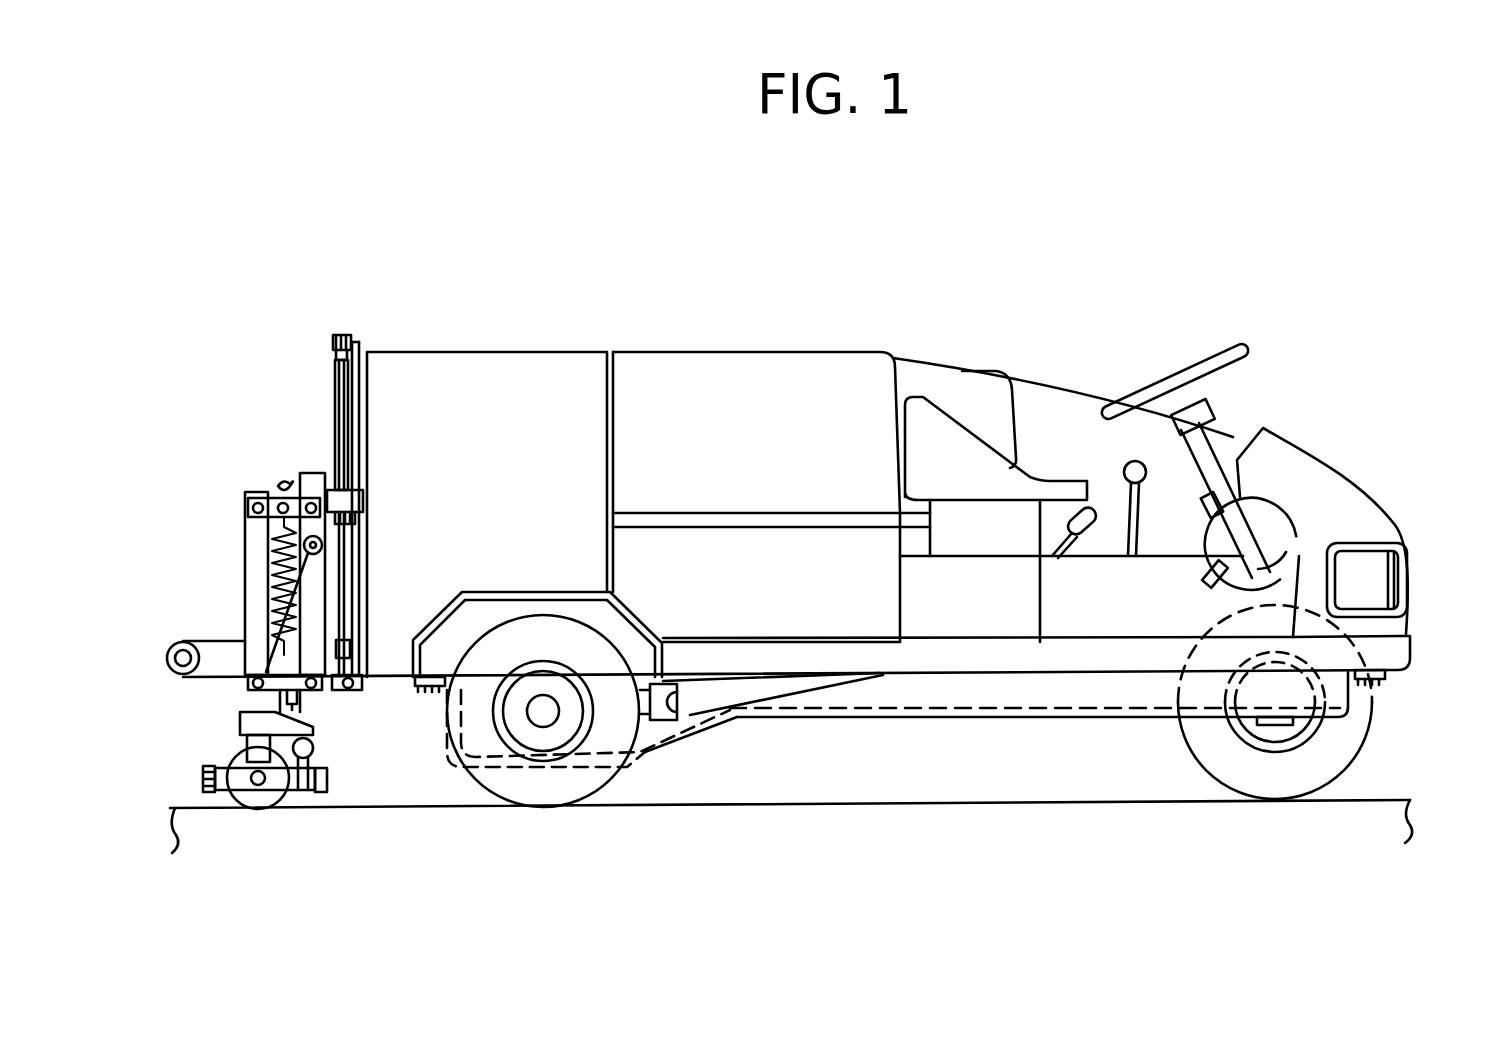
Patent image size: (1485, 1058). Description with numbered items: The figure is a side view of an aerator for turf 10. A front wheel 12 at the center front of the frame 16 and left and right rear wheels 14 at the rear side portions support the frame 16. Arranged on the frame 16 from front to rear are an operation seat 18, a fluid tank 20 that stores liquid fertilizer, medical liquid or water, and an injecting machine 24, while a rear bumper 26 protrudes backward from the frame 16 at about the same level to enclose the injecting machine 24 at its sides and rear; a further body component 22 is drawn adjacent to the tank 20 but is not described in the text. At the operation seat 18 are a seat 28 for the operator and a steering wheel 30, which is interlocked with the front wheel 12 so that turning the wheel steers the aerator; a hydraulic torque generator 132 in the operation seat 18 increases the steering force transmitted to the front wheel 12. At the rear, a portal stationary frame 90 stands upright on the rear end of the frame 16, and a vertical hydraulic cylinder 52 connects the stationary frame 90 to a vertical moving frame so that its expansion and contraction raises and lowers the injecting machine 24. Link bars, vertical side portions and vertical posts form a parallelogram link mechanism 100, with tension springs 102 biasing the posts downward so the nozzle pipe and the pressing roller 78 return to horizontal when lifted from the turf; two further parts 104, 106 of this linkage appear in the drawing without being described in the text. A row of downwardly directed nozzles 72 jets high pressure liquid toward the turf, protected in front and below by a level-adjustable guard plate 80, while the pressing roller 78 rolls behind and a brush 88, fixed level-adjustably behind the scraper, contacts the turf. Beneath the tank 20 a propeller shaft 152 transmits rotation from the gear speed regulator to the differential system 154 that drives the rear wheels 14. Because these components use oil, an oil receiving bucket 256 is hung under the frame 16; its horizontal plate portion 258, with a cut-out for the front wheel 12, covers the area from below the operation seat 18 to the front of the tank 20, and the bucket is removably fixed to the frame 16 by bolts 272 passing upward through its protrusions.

The aerator for turf 10 is at (770, 338).
The front wheel 12 is at (1345, 735).
The rear wheels 14 is at (622, 735).
The frame 16 is at (988, 660).
The operation seat 18 is at (1070, 410).
The fluid tank 20 is at (727, 372).
The hopper 22 is at (472, 365).
The injecting machine 24 is at (306, 403).
The rear bumper 26 is at (172, 648).
The seat 28 is at (930, 432).
The steering wheel 30 is at (1218, 345).
The hydraulic cylinder 52 is at (335, 372).
The nozzles 72 is at (318, 800).
The pressing roller 78 is at (262, 806).
The guard plate 80 is at (330, 805).
The brush 88 is at (210, 808).
The portal stationary frame 90 is at (352, 340).
The parallelogram link mechanism 100 is at (243, 516).
The tension springs 102 is at (270, 565).
The pivot 104 is at (345, 541).
The post 106 is at (255, 600).
The hydraulic torque generator 132 is at (1238, 505).
The propeller shaft 152 is at (762, 684).
The differential system 154 is at (540, 722).
The oil receiving bucket 256 is at (1060, 692).
The horizontal plate portion 258 is at (880, 722).
The bolt 272 is at (435, 692).